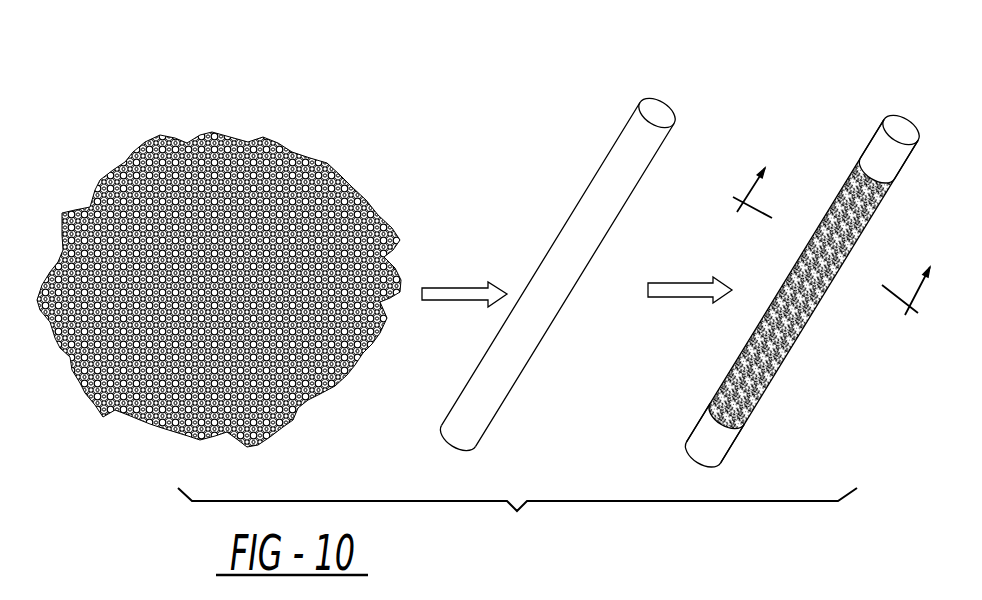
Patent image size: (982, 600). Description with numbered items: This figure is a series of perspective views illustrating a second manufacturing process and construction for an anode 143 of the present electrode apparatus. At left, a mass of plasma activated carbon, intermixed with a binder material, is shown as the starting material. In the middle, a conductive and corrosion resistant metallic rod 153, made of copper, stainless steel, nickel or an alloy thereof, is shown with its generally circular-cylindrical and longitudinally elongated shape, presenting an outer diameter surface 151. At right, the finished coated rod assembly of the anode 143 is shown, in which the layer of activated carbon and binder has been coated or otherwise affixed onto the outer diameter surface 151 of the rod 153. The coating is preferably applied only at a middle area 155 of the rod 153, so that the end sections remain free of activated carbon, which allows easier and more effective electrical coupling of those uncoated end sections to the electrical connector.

The outer diameter surface 151 is at (583, 222).
The metallic rod 153 is at (660, 110).
The middle area 155 is at (748, 385).
The anode 143 is at (900, 130).